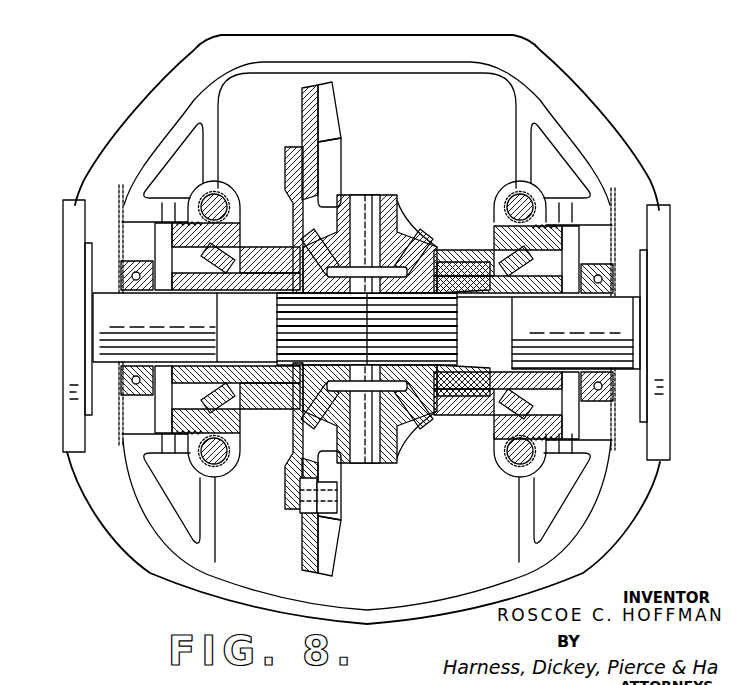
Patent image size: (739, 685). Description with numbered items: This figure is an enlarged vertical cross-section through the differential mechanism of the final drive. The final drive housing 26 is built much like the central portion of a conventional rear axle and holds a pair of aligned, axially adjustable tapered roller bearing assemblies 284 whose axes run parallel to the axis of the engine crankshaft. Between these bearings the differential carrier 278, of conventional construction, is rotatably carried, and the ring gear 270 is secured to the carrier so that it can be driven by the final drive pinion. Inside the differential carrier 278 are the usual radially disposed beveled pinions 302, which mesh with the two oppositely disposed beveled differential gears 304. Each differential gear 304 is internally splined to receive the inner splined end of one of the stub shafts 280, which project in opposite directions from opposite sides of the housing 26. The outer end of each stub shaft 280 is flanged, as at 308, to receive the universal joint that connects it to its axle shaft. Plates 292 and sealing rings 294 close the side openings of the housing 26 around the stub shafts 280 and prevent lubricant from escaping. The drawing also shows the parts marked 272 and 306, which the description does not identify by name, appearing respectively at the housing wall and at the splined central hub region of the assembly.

The housing cover wall 272 is at (563, 83).
The final drive housing 26 is at (620, 147).
The plates 292 is at (122, 195).
The flange 308 is at (75, 232).
The sealing rings 294 is at (110, 392).
The stub shafts 280 is at (105, 300).
The splined hub 306 is at (340, 329).
The beveled differential gears 304 is at (286, 262).
The tapered roller bearing assemblies 284 is at (248, 262).
The beveled pinions 302 is at (400, 233).
The ring gear 270 is at (330, 102).
The differential carrier 278 is at (240, 393).